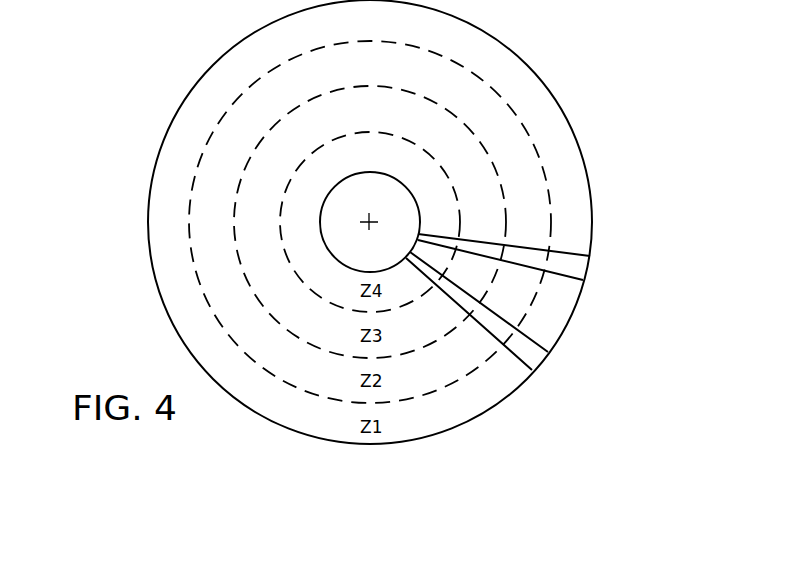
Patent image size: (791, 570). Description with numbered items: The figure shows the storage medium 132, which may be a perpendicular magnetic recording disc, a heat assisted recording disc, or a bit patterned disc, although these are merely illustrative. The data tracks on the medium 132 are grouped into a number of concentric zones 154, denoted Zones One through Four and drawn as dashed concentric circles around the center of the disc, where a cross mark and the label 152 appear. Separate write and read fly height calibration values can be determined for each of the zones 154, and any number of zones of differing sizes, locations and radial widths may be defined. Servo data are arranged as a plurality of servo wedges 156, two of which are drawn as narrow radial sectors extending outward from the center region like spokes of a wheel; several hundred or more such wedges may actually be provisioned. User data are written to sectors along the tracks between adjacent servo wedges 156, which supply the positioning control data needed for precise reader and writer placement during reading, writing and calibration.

The storage medium 132 is at (572, 100).
The center region of wafer 152 is at (376, 228).
The concentric zones 154 is at (170, 197).
The servo wedges 156 is at (577, 270).